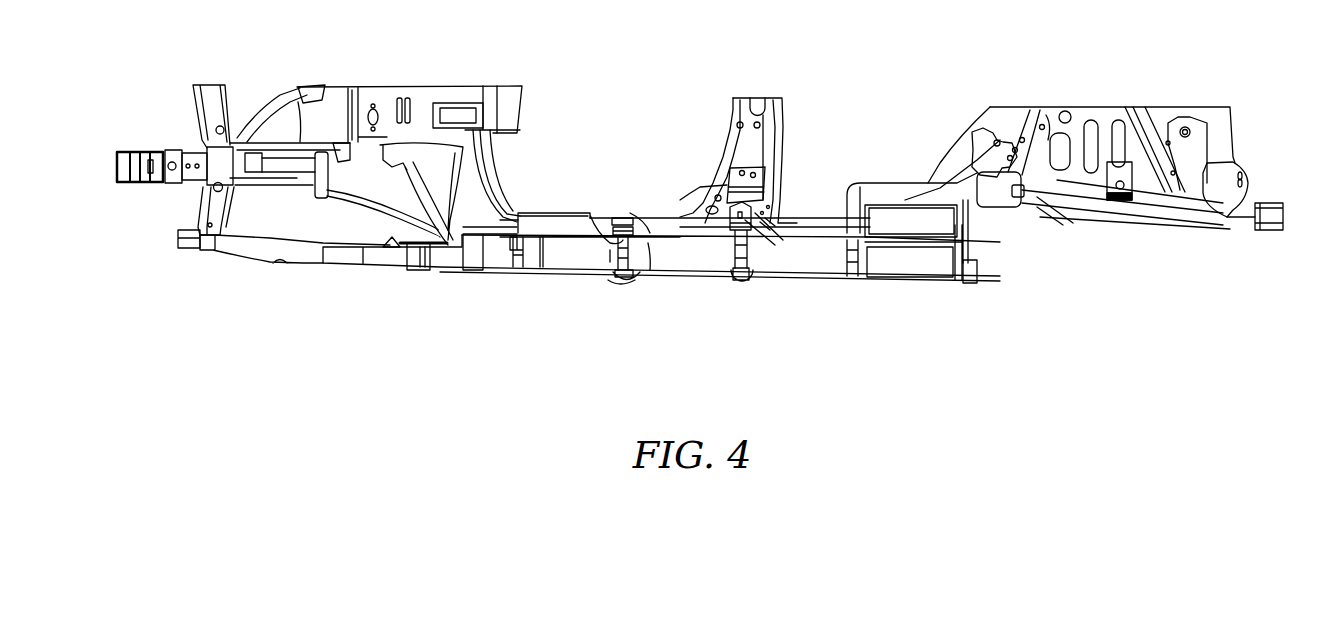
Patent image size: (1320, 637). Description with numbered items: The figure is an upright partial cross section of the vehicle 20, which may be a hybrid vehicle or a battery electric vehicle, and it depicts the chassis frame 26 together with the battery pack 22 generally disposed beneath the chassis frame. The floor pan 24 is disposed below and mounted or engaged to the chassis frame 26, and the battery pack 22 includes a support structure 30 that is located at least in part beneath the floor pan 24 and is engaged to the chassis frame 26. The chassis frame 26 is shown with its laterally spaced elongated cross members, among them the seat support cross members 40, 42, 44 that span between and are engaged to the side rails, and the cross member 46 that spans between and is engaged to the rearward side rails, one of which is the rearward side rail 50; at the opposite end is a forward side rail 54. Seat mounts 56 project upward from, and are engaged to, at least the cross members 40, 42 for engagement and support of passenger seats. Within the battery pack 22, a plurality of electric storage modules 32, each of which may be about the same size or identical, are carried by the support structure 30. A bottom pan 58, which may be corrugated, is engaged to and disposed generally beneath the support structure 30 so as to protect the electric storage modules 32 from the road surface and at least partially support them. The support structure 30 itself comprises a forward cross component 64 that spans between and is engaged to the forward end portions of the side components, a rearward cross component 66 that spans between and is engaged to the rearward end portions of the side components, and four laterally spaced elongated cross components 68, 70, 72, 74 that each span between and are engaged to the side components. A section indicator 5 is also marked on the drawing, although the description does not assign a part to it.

The vehicle 20 is at (1240, 88).
The battery pack 22 is at (564, 237).
The floor pan 24 is at (547, 258).
The chassis frame 26 is at (606, 210).
The support structure 30 is at (893, 290).
The electric storage modules 32 is at (690, 250).
The cross member 40 is at (614, 219).
The cross member 42 is at (732, 256).
The cross member 44 is at (850, 210).
The cross member 46 is at (1000, 195).
The rearward side rail 50 is at (1133, 228).
The forward side rail 54 is at (278, 192).
The seat mounts 56 is at (624, 220).
The bottom pan 58 is at (588, 280).
The forward cross component 64 is at (449, 258).
The rearward cross component 66 is at (977, 270).
The cross component 68 is at (505, 256).
The cross component 70 is at (630, 282).
The cross component 72 is at (758, 282).
The cross component 74 is at (833, 282).
The section line 5 is at (628, 272).